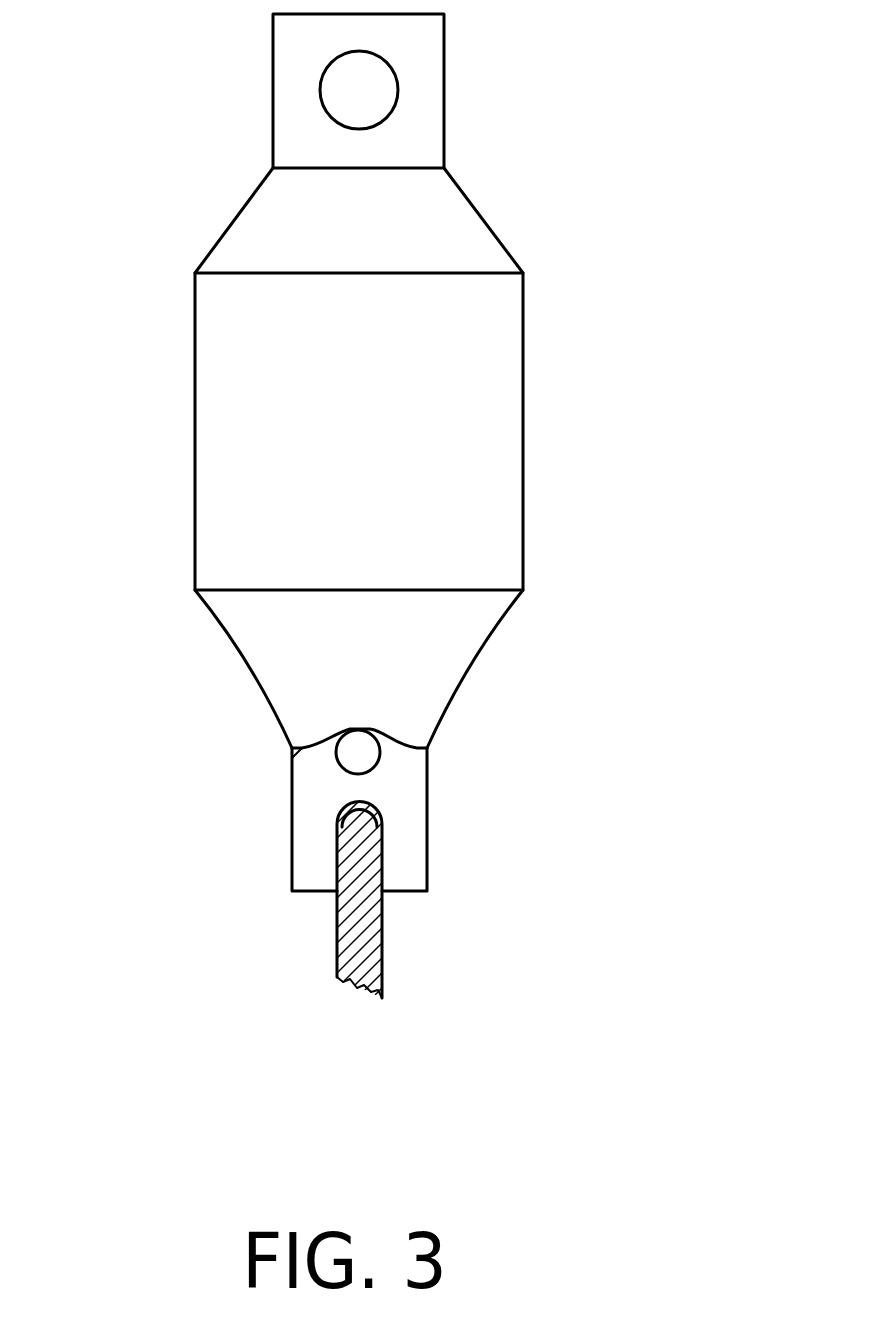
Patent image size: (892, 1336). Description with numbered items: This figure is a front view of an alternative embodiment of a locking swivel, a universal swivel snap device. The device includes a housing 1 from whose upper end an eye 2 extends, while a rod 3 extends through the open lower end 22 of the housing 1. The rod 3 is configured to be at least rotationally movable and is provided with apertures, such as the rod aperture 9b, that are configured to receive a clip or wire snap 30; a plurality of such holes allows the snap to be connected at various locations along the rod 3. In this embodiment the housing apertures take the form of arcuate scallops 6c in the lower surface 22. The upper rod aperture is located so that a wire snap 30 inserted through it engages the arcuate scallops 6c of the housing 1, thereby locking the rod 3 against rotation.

The housing 1 is at (168, 293).
The eye 2 is at (397, 65).
The rod 3 is at (427, 777).
The arcuate scallops 6c is at (393, 737).
The open lower end 22 is at (300, 750).
The rod aperture 9b is at (348, 760).
The wire snap 30 is at (383, 948).